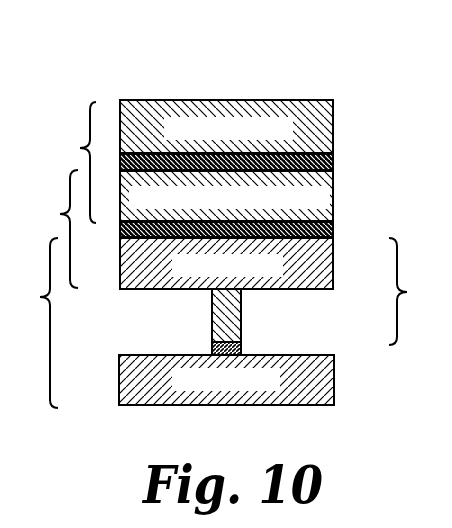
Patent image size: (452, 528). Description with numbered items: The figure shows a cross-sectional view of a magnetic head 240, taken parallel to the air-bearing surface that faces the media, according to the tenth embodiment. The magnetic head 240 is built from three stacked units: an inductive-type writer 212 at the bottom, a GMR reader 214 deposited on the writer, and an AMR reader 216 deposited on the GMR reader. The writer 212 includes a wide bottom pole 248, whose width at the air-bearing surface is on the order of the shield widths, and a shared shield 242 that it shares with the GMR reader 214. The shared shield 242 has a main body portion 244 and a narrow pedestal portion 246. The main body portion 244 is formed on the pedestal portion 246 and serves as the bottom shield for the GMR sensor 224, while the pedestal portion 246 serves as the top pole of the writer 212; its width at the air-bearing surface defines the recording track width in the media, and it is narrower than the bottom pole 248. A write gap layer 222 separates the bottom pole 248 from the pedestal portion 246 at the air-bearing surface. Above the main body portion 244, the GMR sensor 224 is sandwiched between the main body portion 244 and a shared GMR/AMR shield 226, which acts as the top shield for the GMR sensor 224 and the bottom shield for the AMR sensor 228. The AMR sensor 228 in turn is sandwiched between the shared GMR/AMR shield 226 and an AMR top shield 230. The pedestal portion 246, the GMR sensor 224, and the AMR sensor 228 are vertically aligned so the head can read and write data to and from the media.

The magnetic head 240 is at (270, 215).
The AMR top shield 230 is at (333, 125).
The AMR sensor 228 is at (265, 160).
The shared GMR/AMR shield 226 is at (333, 202).
The GMR sensor 224 is at (260, 232).
The main body portion 244 is at (315, 290).
The pedestal portion 246 is at (242, 302).
The write gap layer 222 is at (253, 343).
The bottom pole 248 is at (334, 378).
The shared shield 242 is at (416, 291).
The AMR reader 216 is at (68, 162).
The GMR reader 214 is at (50, 229).
The inductive-type writer 212 is at (31, 323).